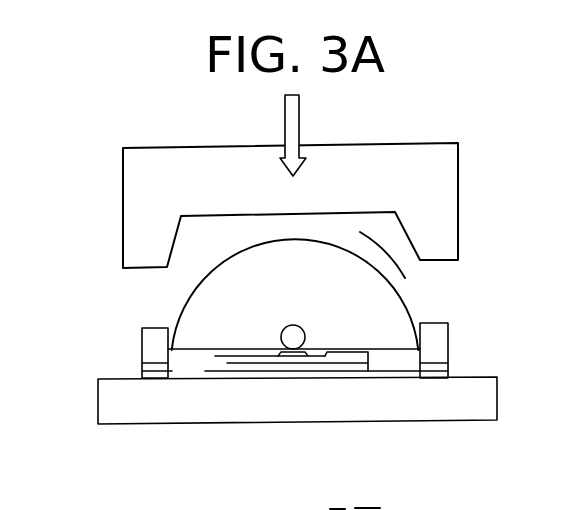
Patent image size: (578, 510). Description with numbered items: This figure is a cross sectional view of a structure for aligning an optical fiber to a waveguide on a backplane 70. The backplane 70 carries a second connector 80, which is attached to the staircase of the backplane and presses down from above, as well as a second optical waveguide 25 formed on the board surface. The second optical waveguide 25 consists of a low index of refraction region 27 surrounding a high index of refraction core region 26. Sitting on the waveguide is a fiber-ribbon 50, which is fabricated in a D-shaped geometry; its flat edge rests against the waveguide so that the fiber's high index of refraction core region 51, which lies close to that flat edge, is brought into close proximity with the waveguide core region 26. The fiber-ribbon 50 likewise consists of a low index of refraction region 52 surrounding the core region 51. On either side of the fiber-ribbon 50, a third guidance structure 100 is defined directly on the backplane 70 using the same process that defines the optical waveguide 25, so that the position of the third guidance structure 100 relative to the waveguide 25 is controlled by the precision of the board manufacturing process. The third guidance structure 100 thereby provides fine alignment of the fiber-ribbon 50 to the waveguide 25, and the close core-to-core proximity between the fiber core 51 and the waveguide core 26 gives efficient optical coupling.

The second connector 80 is at (123, 167).
The fiber-ribbon 50 is at (180, 290).
The low index of refraction region 52 is at (370, 288).
The high index of refraction core region 51 is at (304, 333).
The third guidance structure 100 is at (142, 347).
The low index of refraction region 27 is at (227, 357).
The high index of refraction core region 26 is at (368, 362).
The second optical waveguide 25 is at (222, 358).
The backplane 70 is at (83, 437).